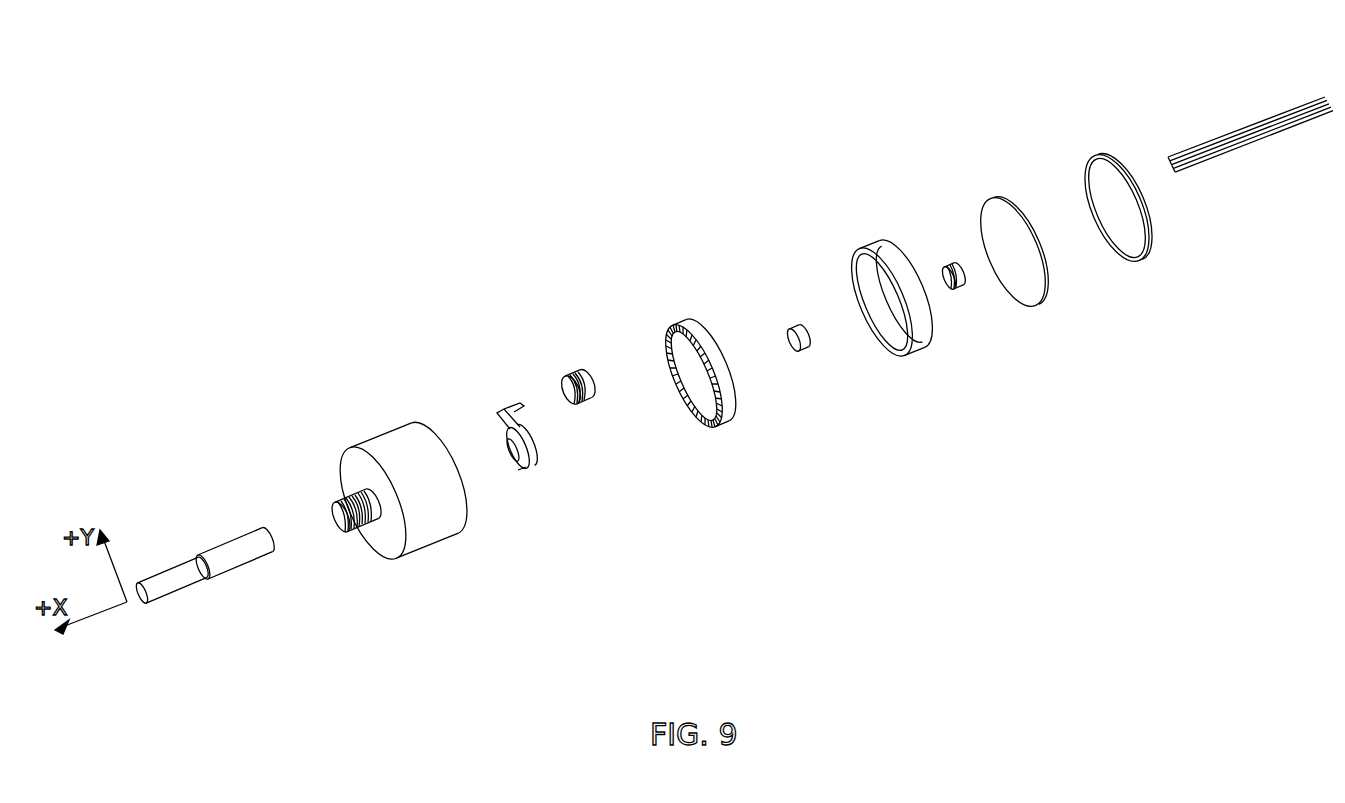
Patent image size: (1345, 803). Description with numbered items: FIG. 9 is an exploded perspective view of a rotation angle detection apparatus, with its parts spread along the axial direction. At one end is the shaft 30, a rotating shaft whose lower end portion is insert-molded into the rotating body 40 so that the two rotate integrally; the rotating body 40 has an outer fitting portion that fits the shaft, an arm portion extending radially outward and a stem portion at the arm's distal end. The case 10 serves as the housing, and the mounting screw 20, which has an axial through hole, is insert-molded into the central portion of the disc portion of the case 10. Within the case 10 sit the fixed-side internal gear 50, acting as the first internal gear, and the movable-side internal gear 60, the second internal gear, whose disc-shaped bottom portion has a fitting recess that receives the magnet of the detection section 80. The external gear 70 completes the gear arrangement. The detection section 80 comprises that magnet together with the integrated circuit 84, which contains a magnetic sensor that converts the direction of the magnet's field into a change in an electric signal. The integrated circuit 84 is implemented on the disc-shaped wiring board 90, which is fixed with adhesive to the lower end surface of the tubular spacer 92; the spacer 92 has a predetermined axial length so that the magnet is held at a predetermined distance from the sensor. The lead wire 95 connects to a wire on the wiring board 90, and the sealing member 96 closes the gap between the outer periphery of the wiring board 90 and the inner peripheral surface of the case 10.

The case 10 is at (382, 440).
The mounting screw 20 is at (342, 503).
The shaft 30 is at (228, 545).
The rotating body 40 is at (495, 410).
The fixed-side internal gear 50 is at (425, 540).
The movable-side internal gear 60 is at (680, 323).
The external gear 70 is at (570, 370).
The detection section 80 is at (795, 320).
The integrated circuit 84 is at (943, 260).
The wiring board 90 is at (993, 197).
The spacer 92 is at (863, 247).
The lead wire 95 is at (1200, 143).
The sealing member 96 is at (1088, 157).